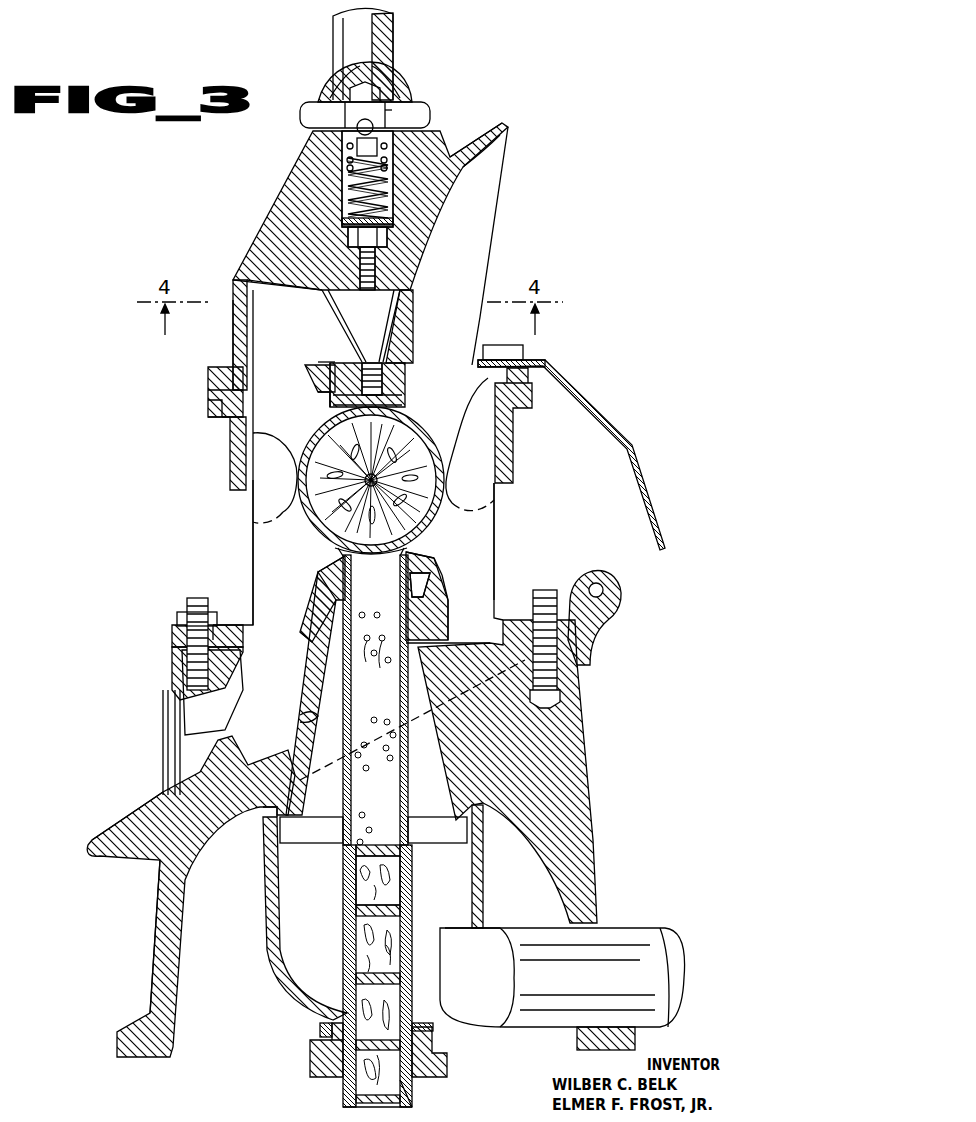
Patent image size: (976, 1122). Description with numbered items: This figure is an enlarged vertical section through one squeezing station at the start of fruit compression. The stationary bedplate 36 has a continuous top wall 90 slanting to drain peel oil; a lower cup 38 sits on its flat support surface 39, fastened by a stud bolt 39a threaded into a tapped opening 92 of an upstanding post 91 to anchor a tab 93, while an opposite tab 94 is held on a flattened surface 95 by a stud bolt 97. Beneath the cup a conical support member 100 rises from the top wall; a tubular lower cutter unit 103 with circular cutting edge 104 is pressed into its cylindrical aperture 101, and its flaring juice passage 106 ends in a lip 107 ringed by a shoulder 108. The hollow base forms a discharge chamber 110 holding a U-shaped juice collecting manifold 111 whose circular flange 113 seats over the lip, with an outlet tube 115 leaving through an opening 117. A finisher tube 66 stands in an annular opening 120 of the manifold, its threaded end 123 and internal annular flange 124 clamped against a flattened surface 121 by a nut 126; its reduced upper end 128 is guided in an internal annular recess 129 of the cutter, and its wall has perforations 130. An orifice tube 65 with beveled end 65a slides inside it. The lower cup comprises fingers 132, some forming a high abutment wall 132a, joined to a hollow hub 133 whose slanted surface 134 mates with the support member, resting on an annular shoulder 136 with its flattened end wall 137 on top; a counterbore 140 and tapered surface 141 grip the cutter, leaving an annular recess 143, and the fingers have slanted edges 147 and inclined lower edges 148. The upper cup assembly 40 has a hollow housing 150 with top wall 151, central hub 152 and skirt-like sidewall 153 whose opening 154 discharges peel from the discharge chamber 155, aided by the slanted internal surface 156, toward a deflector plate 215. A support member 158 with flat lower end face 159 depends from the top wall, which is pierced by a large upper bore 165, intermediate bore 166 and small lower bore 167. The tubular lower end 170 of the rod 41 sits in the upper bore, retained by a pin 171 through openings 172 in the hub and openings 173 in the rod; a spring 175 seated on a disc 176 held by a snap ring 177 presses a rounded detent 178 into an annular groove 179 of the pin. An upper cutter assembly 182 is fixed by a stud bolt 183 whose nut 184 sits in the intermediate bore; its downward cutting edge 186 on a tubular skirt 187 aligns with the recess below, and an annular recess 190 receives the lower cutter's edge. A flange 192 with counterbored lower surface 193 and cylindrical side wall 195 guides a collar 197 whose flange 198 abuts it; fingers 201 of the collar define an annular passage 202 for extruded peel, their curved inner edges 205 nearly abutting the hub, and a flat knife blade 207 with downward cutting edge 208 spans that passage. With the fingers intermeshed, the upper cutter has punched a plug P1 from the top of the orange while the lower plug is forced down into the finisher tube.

The bedplate 36 is at (158, 780).
The lower cup 38 is at (262, 556).
The top flat support surface 39 is at (236, 657).
The stud bolt 39a is at (195, 600).
The upper cup assembly 40 is at (212, 422).
The rod 41 is at (392, 45).
The orifice tube 65 is at (354, 945).
The upper beveled end 65a is at (396, 890).
The finisher tube 66 is at (348, 962).
The top wall 90 is at (145, 832).
The post 91 is at (170, 718).
The tapped opening 92 is at (186, 666).
The tab 93 is at (172, 636).
The tab 94 is at (566, 636).
The flattened surface 95 is at (592, 665).
The stud bolt 97 is at (565, 592).
The support member 100 is at (304, 692).
The cylindrical aperture 101 is at (412, 599).
The lower cutter unit 103 is at (412, 582).
The upper circular cutting edge 104 is at (346, 532).
The juice passage 106 is at (300, 718).
The lip 107 is at (283, 845).
The shoulder 108 is at (373, 830).
The transverse discharge chamber 110 is at (200, 920).
The juice collecting manifold 111 is at (270, 945).
The circular flange 113 is at (272, 815).
The outlet tube 115 is at (584, 981).
The opening 117 is at (588, 928).
The annular opening 120 is at (336, 1050).
The flattened surface 121 is at (328, 1030).
The enlarged threaded end 123 is at (414, 1080).
The internal annular flange 124 is at (430, 1027).
The nut 126 is at (448, 1065).
The upper reduced end portion 128 is at (436, 630).
The internal annular recess 129 is at (332, 590).
The perforations 130 is at (375, 720).
The fingers 132 is at (258, 532).
The high abutment wall 132a is at (500, 431).
The central hub 133 is at (312, 624).
The internal slanted surface 134 is at (306, 636).
The annular shoulder 136 is at (430, 643).
The internal flattened upper end wall 137 is at (410, 569).
The counterbore 140 is at (345, 552).
The tapered surface 141 is at (410, 558).
The annular recess 143 is at (414, 546).
The slanted edges 147 is at (370, 445).
The inwardly inclined lower edges 148 is at (250, 612).
The hollow housing 150 is at (243, 330).
The top wall 151 is at (490, 150).
The central hub 152 is at (320, 150).
The skirt-like sidewall 153 is at (236, 345).
The opening 154 is at (478, 213).
The discharge chamber 155 is at (446, 248).
The internal surface 156 is at (478, 162).
The support member 158 is at (391, 334).
The lower end face 159 is at (386, 362).
The upper bore 165 is at (396, 205).
The intermediate bore 166 is at (380, 242).
The lower bore 167 is at (397, 280).
The tubular lower end 170 is at (346, 182).
The pin 171 is at (300, 118).
The aligned openings 172 is at (330, 100).
The aligned openings 173 is at (355, 90).
The spring 175 is at (352, 190).
The disc 176 is at (345, 213).
The snap ring 177 is at (393, 226).
The rounded detent 178 is at (342, 120).
The annular groove 179 is at (395, 112).
The upper cutter assembly 182 is at (406, 372).
The stud bolt 183 is at (358, 270).
The nut 184 is at (358, 236).
The circular cutting edge 186 is at (406, 417).
The tubular skirt portion 187 is at (406, 401).
The annular recess 190 is at (406, 386).
The flange 192 is at (215, 373).
The lower surface 193 is at (216, 405).
The cylindrical side wall 195 is at (215, 381).
The collar 197 is at (232, 466).
The flange 198 is at (226, 420).
The fingers 201 is at (252, 500).
The annular passage 202 is at (322, 404).
The curved inner edges 205 is at (336, 442).
The knife blade 207 is at (336, 358).
The cutting edge 208 is at (310, 380).
The deflector plate 215 is at (618, 432).
The plug P1 is at (388, 416).